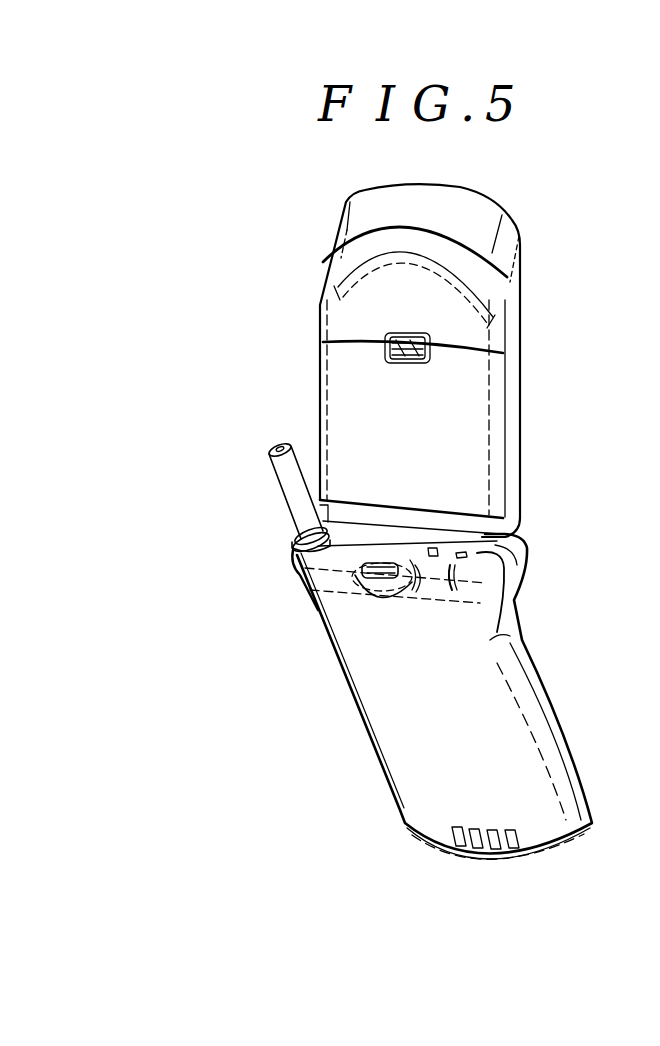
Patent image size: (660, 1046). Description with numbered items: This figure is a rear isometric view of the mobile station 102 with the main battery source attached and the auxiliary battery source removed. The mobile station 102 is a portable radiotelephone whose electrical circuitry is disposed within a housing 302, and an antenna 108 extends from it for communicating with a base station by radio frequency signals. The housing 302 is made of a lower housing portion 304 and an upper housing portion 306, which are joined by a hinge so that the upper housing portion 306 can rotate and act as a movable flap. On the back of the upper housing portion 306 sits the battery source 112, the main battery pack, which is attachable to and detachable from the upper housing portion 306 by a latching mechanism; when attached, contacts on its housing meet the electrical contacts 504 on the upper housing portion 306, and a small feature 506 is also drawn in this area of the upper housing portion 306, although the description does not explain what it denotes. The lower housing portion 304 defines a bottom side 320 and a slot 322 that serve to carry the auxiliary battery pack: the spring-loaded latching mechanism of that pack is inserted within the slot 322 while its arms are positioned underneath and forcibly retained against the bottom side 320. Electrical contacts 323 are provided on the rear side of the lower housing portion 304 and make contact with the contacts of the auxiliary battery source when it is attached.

The mobile station 102 is at (557, 742).
The antenna 108 is at (272, 465).
The battery source 112 is at (338, 408).
The housing 302 is at (300, 562).
The lower housing portion 304 is at (392, 798).
The upper housing portion 306 is at (335, 222).
The bottom side 320 is at (523, 860).
The slot 322 is at (372, 567).
The electrical contacts 323 is at (477, 858).
The electrical contacts 504 is at (361, 326).
The speaker 506 is at (404, 338).